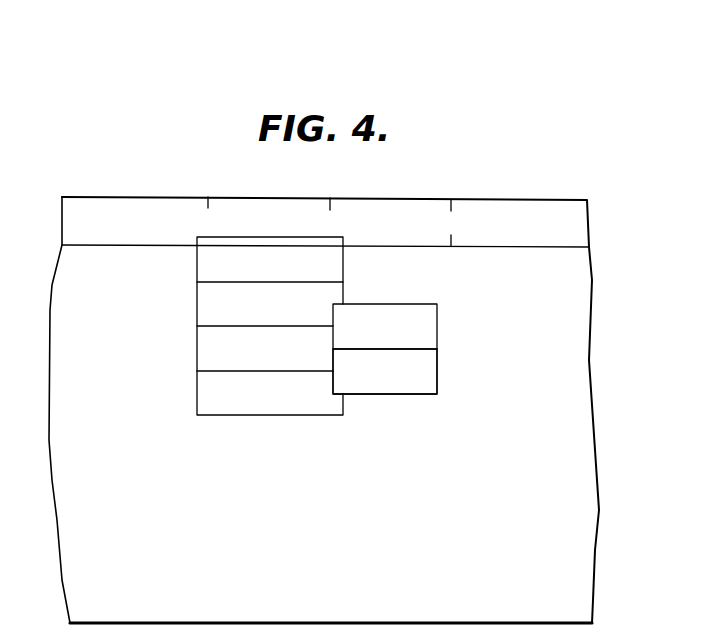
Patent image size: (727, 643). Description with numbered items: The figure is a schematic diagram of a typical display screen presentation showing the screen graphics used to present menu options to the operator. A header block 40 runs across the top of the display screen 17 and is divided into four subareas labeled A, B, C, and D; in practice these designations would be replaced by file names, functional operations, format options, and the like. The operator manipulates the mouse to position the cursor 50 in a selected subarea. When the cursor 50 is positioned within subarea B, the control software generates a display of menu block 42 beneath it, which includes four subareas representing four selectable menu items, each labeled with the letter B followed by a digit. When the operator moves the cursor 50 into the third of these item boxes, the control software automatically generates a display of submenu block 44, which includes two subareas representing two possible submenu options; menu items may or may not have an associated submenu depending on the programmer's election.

The display screen 17 is at (70, 512).
The header block 40 is at (577, 226).
The menu block 42 is at (178, 321).
The submenu block 44 is at (427, 289).
The cursor 50 is at (435, 375).